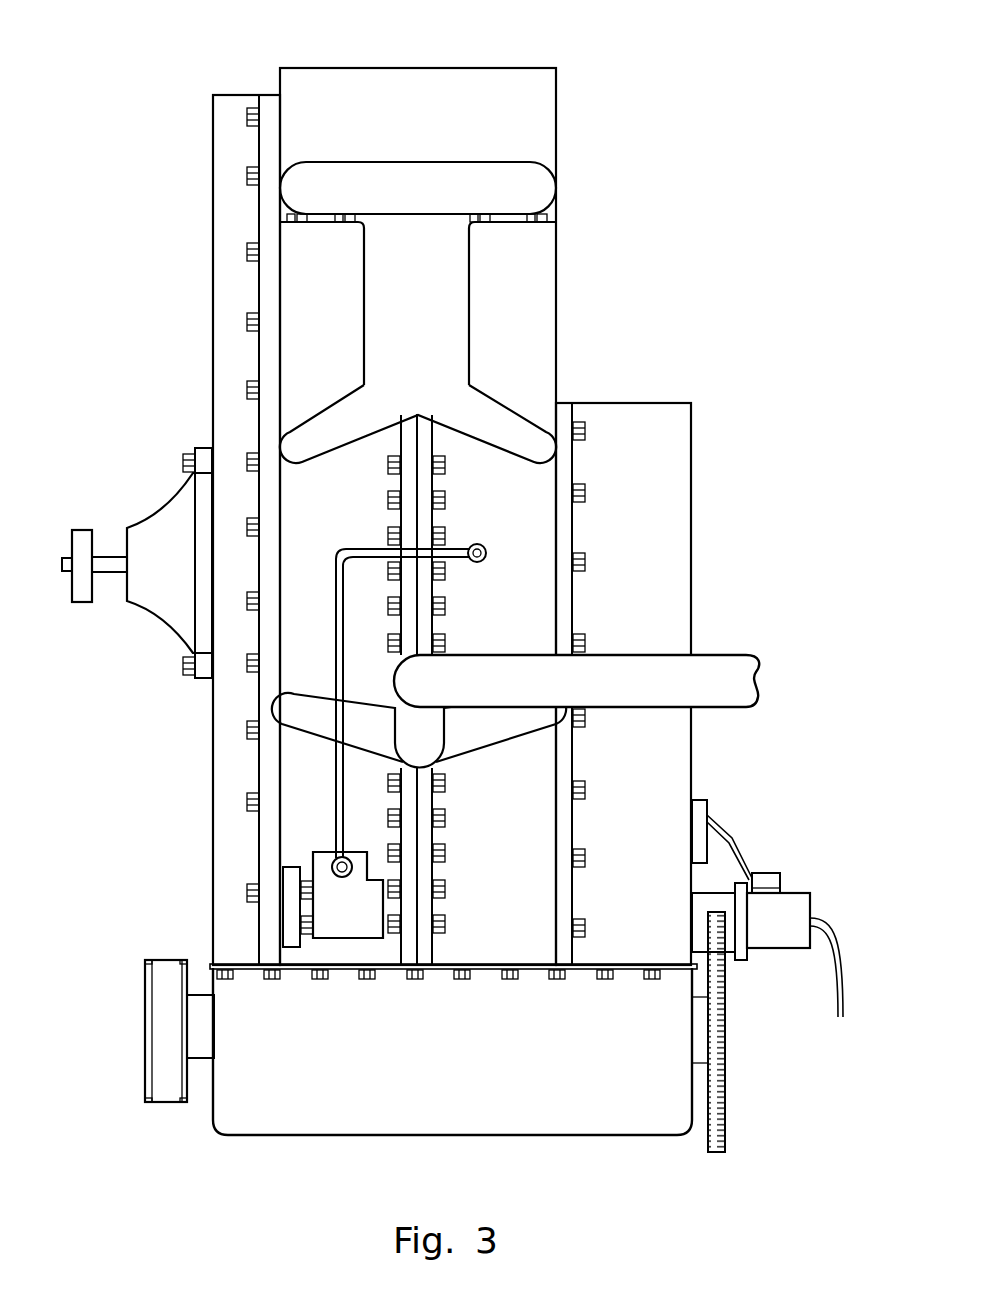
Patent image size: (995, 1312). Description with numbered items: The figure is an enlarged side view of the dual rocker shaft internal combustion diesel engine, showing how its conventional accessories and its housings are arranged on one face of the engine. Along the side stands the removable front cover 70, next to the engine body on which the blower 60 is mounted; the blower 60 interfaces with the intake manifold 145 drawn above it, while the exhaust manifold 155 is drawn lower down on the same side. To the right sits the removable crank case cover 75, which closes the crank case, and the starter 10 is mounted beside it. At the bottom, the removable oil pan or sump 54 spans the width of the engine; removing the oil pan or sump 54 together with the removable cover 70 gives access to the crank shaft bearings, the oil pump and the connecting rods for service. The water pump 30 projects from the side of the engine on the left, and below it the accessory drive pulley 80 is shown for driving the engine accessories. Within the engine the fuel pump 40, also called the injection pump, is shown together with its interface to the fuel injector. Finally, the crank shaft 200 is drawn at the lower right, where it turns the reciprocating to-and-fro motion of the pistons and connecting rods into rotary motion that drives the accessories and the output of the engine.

The starter 10 is at (798, 888).
The water pump 30 is at (83, 528).
The fuel pump 40 is at (366, 920).
The oil pan or sump 54 is at (460, 1083).
The blower 60 is at (394, 73).
The front cover 70 is at (238, 93).
The crank case cover 75 is at (692, 442).
The accessory drive pulley 80 is at (158, 1012).
The intake manifold 145 is at (452, 170).
The exhaust manifold 155 is at (473, 737).
The crank shaft 200 is at (723, 1062).